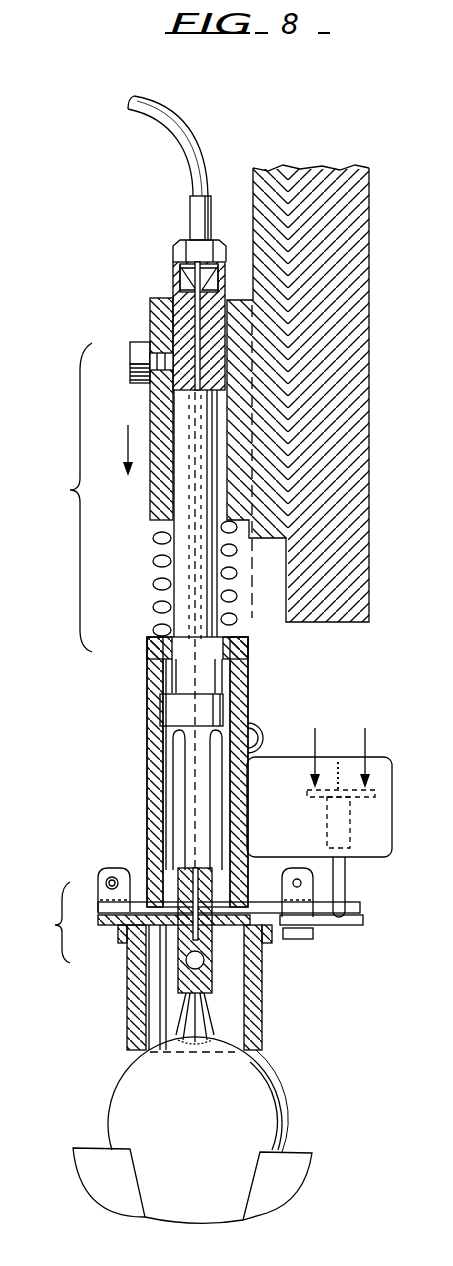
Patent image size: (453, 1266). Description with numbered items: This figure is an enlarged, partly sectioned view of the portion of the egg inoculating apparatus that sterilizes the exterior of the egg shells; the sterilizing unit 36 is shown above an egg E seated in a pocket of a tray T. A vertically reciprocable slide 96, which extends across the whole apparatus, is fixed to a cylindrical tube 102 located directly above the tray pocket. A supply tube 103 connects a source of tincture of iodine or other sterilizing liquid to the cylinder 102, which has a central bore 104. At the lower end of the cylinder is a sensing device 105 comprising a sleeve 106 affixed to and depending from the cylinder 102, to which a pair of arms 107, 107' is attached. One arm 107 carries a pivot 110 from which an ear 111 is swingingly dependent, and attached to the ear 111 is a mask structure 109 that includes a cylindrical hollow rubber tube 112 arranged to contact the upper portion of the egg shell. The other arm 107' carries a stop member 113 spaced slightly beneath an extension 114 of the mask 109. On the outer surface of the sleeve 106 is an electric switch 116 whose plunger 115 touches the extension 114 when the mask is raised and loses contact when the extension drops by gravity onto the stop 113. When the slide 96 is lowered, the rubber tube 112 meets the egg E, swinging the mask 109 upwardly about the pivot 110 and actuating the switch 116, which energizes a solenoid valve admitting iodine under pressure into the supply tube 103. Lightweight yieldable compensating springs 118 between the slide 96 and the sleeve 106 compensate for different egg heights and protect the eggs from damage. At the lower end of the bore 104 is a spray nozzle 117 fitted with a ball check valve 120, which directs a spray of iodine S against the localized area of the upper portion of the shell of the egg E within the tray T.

The vertically reciprocable slide 96 is at (262, 164).
The supply tube 103 is at (178, 135).
The central bore 104 is at (196, 318).
The injector assembly 36 is at (56, 497).
The cylindrical tube 102 is at (185, 547).
The compensating spring 118 is at (160, 590).
The sleeve 106 is at (150, 767).
The arm 107 is at (220, 861).
The arm 107' is at (284, 862).
The electric switch 116 is at (378, 828).
The plunger 115 is at (340, 884).
The pivot 110 is at (107, 880).
The sensing device 105 is at (42, 922).
The extension 114 is at (363, 925).
The ear 111 is at (100, 913).
The mask structure 109 is at (274, 932).
The stop member 113 is at (305, 940).
The spray nozzle 117 is at (188, 975).
The ball check valve 120 is at (145, 1027).
The cylindrical hollow rubber tube 112 is at (263, 1017).
The spray of iodine S is at (175, 1012).
The egg E is at (255, 1098).
The tray T is at (290, 1181).